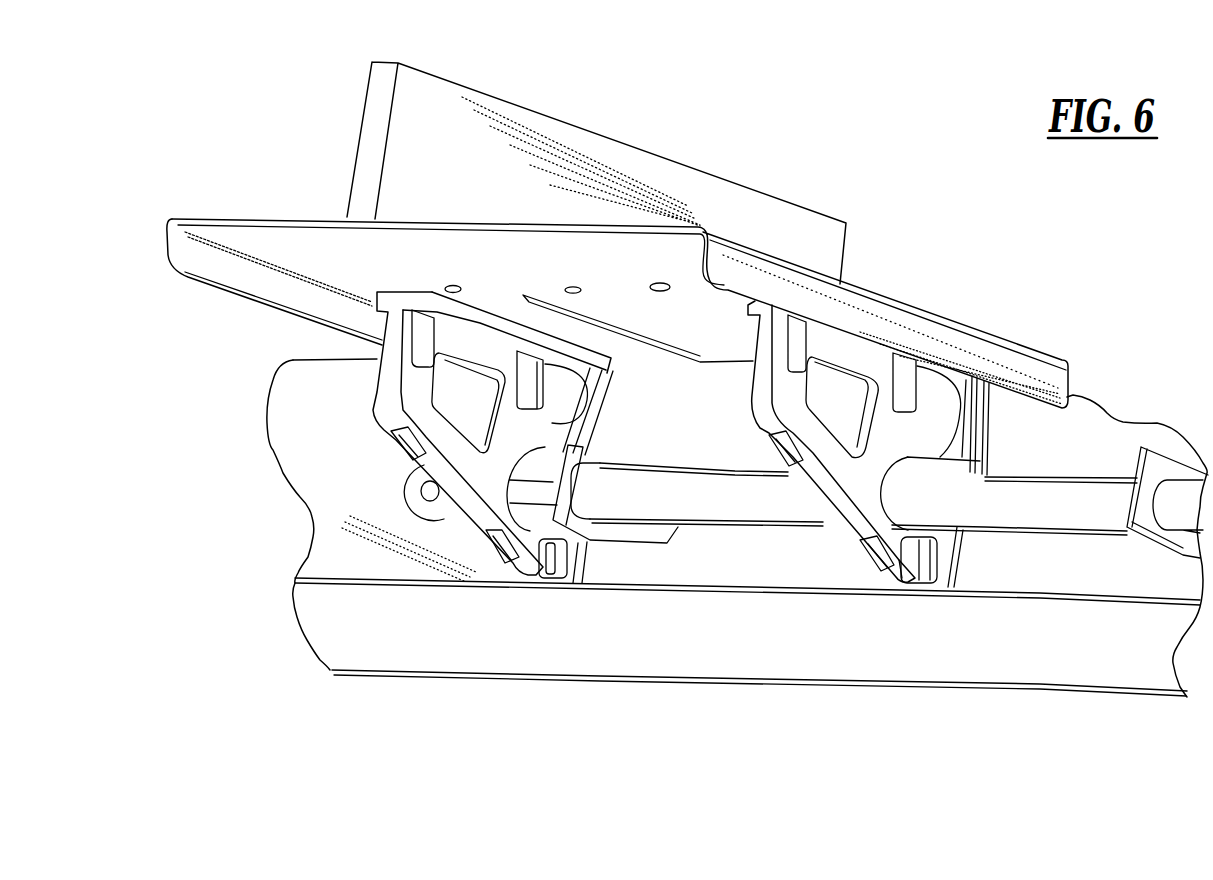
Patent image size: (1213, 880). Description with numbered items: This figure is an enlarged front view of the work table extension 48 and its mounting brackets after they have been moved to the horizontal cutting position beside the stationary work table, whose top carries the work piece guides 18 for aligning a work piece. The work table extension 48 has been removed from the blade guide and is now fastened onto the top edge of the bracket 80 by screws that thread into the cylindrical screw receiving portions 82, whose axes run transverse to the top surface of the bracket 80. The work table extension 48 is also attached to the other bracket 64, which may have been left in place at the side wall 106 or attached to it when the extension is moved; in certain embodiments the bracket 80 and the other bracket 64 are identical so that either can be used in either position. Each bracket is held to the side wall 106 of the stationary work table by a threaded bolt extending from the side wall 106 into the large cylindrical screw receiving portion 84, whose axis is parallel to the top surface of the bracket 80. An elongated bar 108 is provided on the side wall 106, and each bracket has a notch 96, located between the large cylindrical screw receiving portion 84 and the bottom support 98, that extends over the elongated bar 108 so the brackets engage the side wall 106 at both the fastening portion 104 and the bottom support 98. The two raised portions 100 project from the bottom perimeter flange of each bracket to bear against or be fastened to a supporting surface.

The work piece guides 18 is at (560, 142).
The work table extension 48 is at (460, 226).
The other bracket 64 is at (390, 385).
The bracket 80 is at (833, 470).
The cylindrical screw receiving portions 82 is at (803, 323).
The large cylindrical screw receiving portion 84 is at (968, 372).
The notch 96 is at (900, 538).
The bottom support 98 is at (933, 563).
The raised portions 100 is at (785, 459).
The fastening portion 104 is at (977, 417).
The side wall 106 is at (360, 550).
The elongated bar 108 is at (1090, 510).